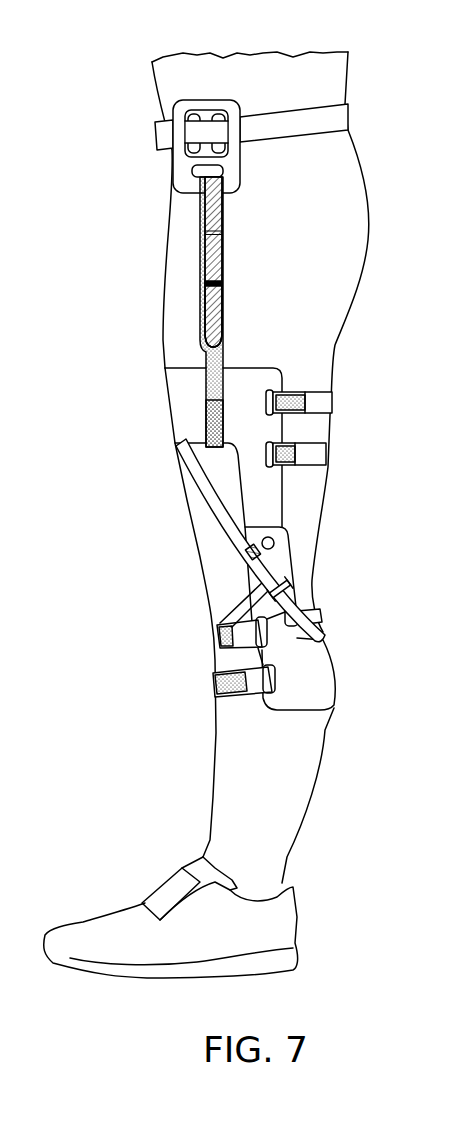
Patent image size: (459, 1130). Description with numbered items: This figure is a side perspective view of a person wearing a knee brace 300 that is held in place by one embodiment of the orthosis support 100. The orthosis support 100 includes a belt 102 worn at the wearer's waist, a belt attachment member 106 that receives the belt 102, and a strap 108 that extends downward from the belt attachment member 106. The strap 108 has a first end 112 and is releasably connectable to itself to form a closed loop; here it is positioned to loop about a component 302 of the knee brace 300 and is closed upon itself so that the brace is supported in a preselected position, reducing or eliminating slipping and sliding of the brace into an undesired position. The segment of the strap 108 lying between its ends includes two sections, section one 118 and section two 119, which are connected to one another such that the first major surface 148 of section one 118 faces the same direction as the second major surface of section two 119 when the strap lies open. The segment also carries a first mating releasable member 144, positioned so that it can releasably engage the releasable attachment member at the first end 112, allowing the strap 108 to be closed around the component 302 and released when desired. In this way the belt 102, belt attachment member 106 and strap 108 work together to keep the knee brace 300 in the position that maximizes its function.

The orthosis support 100 is at (213, 368).
The belt 102 is at (157, 135).
The belt attachment member 106 is at (202, 100).
The strap 108 is at (218, 212).
The section one 118 is at (222, 247).
The first end 112 is at (222, 307).
The first major surface 148 is at (227, 392).
The first mating releasable member 144 is at (207, 410).
The component 302 is at (173, 393).
The knee brace 300 is at (270, 507).
The section two 119 is at (203, 445).